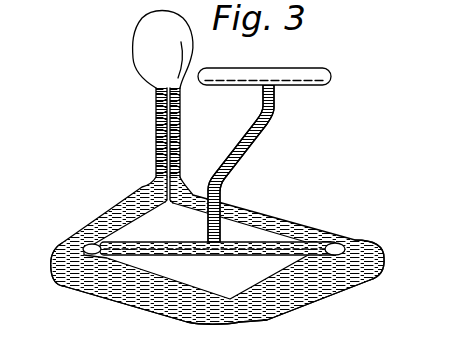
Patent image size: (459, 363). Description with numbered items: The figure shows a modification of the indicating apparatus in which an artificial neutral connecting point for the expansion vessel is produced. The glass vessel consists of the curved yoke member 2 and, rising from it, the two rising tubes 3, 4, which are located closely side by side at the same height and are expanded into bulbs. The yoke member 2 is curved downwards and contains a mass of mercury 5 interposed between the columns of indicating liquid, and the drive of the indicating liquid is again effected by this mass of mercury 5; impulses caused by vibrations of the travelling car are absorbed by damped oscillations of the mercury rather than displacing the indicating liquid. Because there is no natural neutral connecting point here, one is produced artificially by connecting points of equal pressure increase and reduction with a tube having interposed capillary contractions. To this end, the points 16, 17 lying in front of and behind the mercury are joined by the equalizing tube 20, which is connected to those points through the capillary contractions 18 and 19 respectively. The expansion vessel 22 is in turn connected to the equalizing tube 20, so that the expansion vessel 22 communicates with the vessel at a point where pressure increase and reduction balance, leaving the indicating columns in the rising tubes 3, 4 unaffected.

The yoke member 2 is at (83, 272).
The rising tube 3 is at (181, 124).
The rising tube 4 is at (156, 118).
The mass of mercury 5 is at (282, 305).
The point in front of the mercury 16 is at (75, 230).
The point behind the mercury 17 is at (357, 236).
The capillary contraction 18 is at (112, 243).
The capillary contraction 19 is at (322, 248).
The equalizing tube 20 is at (192, 248).
The expansion vessel 22 is at (303, 69).